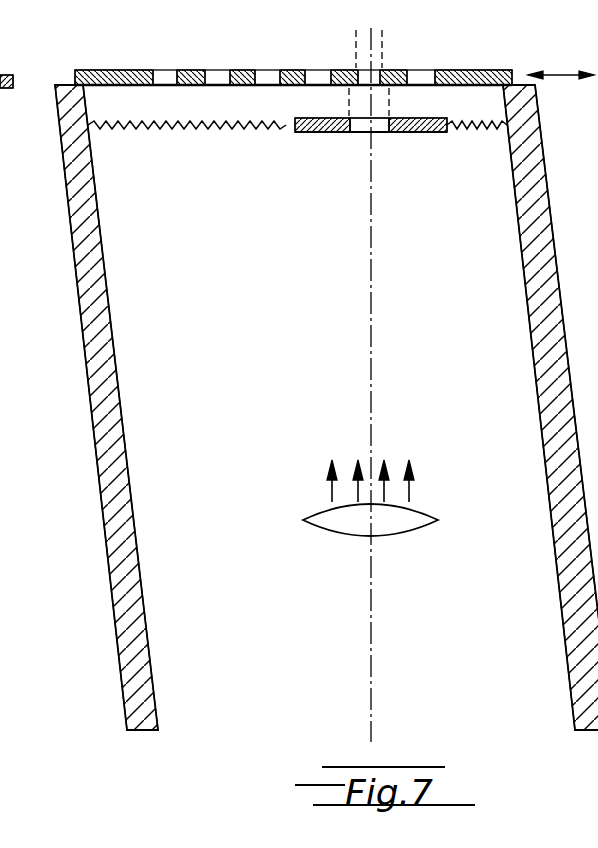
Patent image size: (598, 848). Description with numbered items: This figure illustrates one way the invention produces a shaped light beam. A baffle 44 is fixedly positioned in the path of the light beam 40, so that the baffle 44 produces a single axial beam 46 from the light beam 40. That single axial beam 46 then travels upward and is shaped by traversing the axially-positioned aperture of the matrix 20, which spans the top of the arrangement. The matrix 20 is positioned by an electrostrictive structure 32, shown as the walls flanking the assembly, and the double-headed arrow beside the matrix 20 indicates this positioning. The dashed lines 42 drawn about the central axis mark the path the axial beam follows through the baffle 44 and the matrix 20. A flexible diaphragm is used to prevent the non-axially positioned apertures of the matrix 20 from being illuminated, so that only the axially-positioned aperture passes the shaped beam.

The matrix 20 is at (512, 70).
The electrostrictive structure 32 is at (69, 211).
The light beam 40 is at (425, 530).
The light beam path 42 is at (356, 46).
The baffle 44 is at (296, 117).
The single axial beam 46 is at (390, 113).